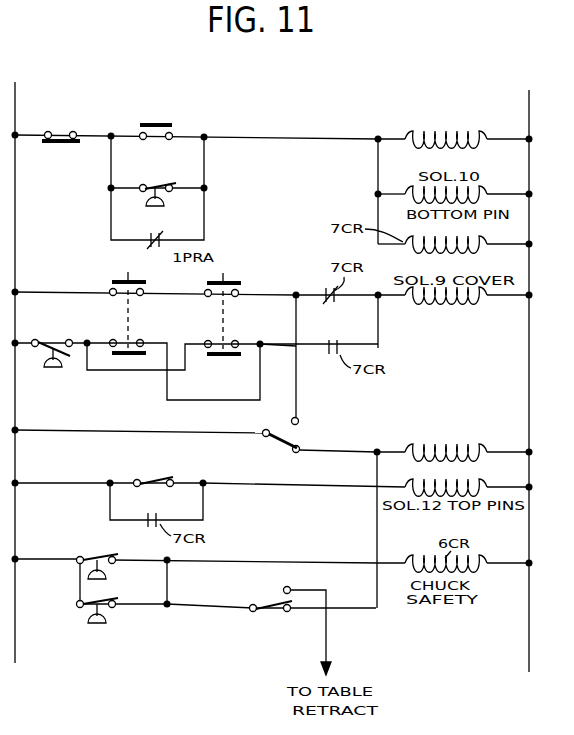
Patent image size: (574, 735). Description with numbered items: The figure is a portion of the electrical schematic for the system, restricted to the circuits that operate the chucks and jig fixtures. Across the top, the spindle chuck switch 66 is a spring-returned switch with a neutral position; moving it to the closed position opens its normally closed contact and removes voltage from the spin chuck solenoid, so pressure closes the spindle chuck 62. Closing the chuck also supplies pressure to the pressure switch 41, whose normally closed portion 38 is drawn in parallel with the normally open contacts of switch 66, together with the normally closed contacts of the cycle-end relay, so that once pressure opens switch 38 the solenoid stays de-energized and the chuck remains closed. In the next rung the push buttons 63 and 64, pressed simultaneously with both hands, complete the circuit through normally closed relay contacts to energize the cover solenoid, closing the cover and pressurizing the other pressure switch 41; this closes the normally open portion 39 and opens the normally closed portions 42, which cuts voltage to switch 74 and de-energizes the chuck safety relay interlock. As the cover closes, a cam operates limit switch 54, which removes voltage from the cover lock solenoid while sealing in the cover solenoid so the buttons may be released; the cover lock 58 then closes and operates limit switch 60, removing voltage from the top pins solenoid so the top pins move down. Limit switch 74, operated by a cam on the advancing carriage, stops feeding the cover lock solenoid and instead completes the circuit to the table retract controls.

The spindle chuck switch 66 is at (60, 133).
The pressure switch 38 is at (149, 205).
The push button switch 63 is at (125, 276).
The push button switch 64 is at (229, 277).
The pressure switch 39 is at (54, 369).
The limit switch 54 is at (284, 439).
The limit switch 60 is at (154, 478).
The pressure switch 41 is at (107, 575).
The pressure switch contacts 42 is at (100, 625).
The limit switch 74 is at (274, 613).
The spindle chuck 62 is at (455, 123).
The cover lock 58 is at (451, 435).